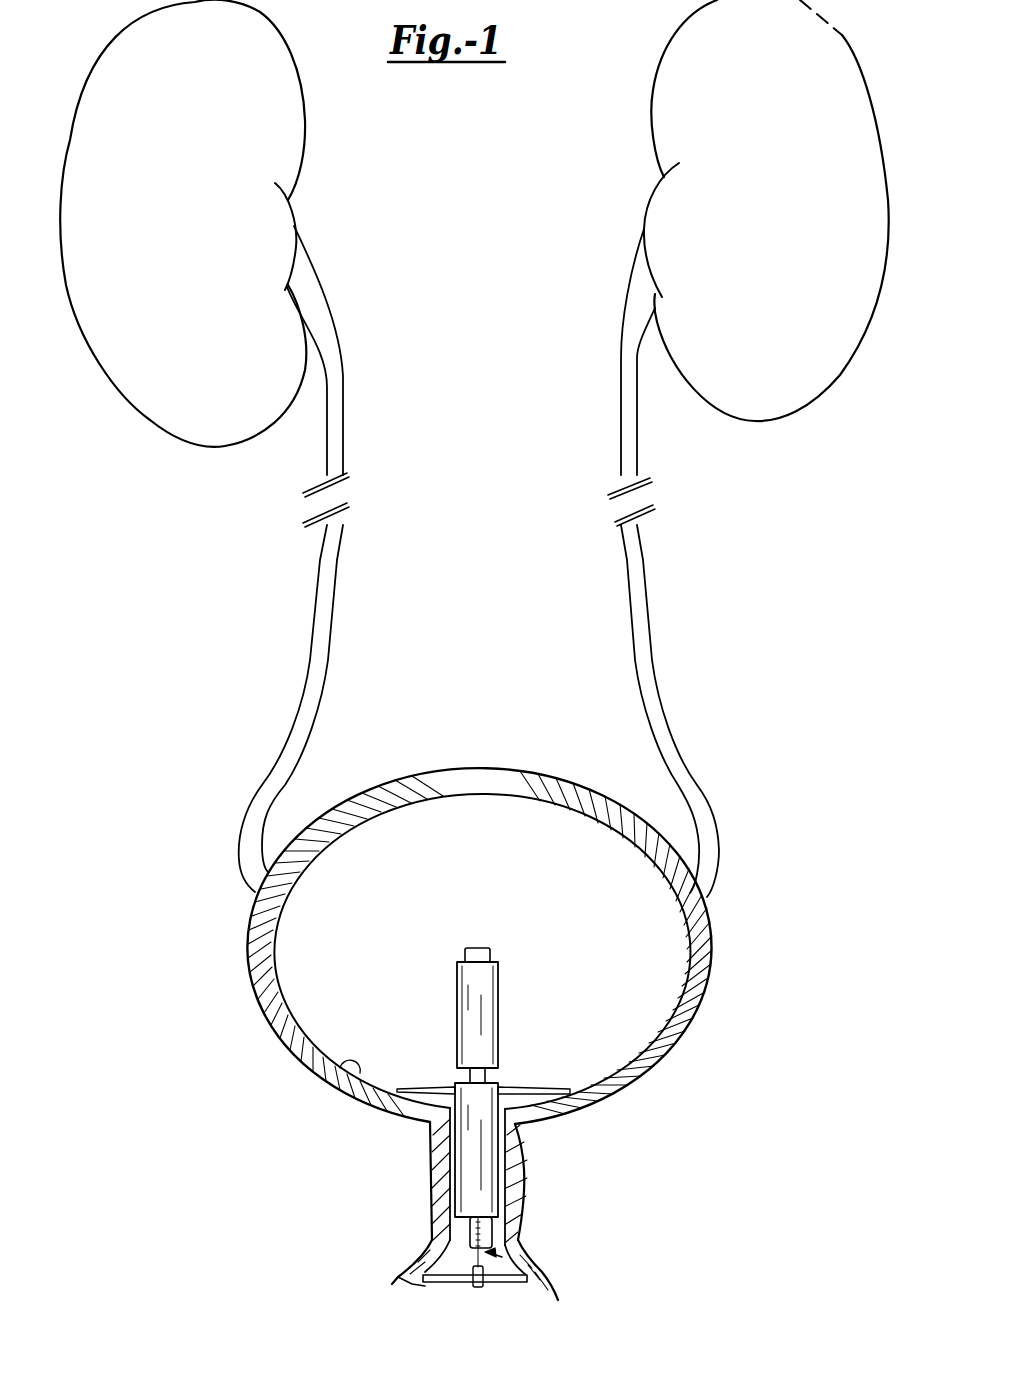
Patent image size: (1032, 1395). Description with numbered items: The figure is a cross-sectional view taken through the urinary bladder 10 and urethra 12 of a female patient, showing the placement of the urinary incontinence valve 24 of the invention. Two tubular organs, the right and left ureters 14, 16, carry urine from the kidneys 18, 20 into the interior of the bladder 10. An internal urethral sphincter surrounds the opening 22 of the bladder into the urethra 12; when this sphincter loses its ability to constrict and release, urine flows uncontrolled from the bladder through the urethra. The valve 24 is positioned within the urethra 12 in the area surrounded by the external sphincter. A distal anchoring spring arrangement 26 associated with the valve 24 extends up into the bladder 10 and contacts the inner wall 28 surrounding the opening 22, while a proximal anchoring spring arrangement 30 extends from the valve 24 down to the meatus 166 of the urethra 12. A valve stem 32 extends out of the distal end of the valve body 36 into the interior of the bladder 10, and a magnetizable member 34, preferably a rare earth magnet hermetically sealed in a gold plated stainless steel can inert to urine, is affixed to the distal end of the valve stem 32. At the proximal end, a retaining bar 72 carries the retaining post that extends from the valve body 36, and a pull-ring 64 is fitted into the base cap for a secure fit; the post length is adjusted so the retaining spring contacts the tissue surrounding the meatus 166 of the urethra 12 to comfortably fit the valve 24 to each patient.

The urinary bladder 10 is at (441, 948).
The urethra 12 is at (522, 1207).
The right ureter 14 is at (633, 647).
The left ureter 16 is at (332, 643).
The kidney 18 is at (303, 95).
The kidney 20 is at (653, 91).
The opening of the bladder 22 is at (512, 1117).
The urinary incontinence valve 24 is at (477, 1131).
The distal anchoring spring arrangement 26 is at (413, 1085).
The inner wall 28 is at (332, 1085).
The proximal anchoring spring arrangement 30 is at (453, 1283).
The valve stem 32 is at (485, 1077).
The magnetizable member 34 is at (502, 1008).
The valve body 36 is at (497, 1170).
The pull-ring 64 is at (495, 1232).
The retaining bar 72 is at (445, 1255).
The meatus 166 is at (533, 1273).